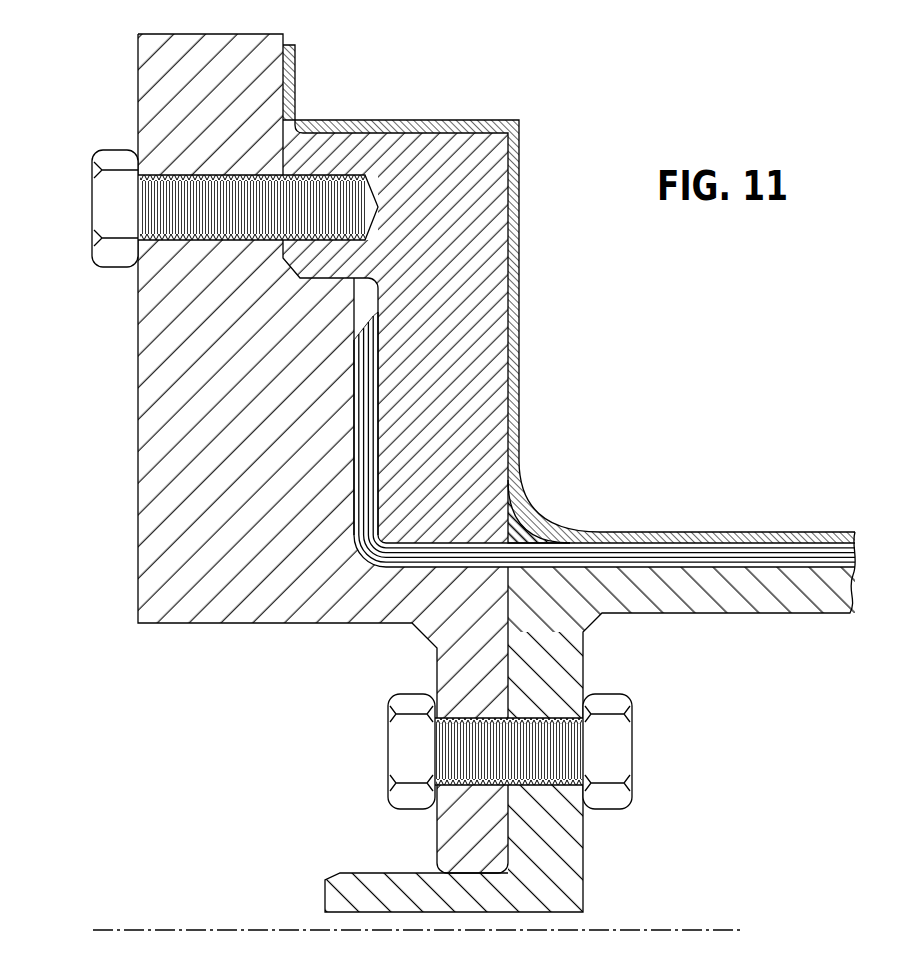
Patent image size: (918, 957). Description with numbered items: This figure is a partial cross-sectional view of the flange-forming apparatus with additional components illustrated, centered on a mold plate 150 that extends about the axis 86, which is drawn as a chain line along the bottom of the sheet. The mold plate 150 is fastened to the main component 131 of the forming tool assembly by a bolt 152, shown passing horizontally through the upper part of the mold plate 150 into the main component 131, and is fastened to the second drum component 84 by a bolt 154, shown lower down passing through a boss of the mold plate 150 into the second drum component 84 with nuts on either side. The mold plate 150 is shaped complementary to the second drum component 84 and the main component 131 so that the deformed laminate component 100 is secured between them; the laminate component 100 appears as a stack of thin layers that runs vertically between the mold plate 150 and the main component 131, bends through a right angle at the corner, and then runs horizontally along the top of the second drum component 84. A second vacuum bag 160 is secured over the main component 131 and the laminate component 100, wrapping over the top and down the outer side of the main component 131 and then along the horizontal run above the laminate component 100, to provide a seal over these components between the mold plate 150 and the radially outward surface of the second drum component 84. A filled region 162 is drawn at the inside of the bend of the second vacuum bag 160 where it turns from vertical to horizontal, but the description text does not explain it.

The mold plate 150 is at (249, 36).
The main component 131 is at (445, 132).
The second vacuum bag 160 is at (519, 263).
The fillet 162 is at (520, 490).
The laminate component 100 is at (362, 548).
The second drum component 84 is at (757, 614).
The bolt 152 is at (92, 203).
The bolt 154 is at (632, 752).
The axis 86 is at (200, 930).